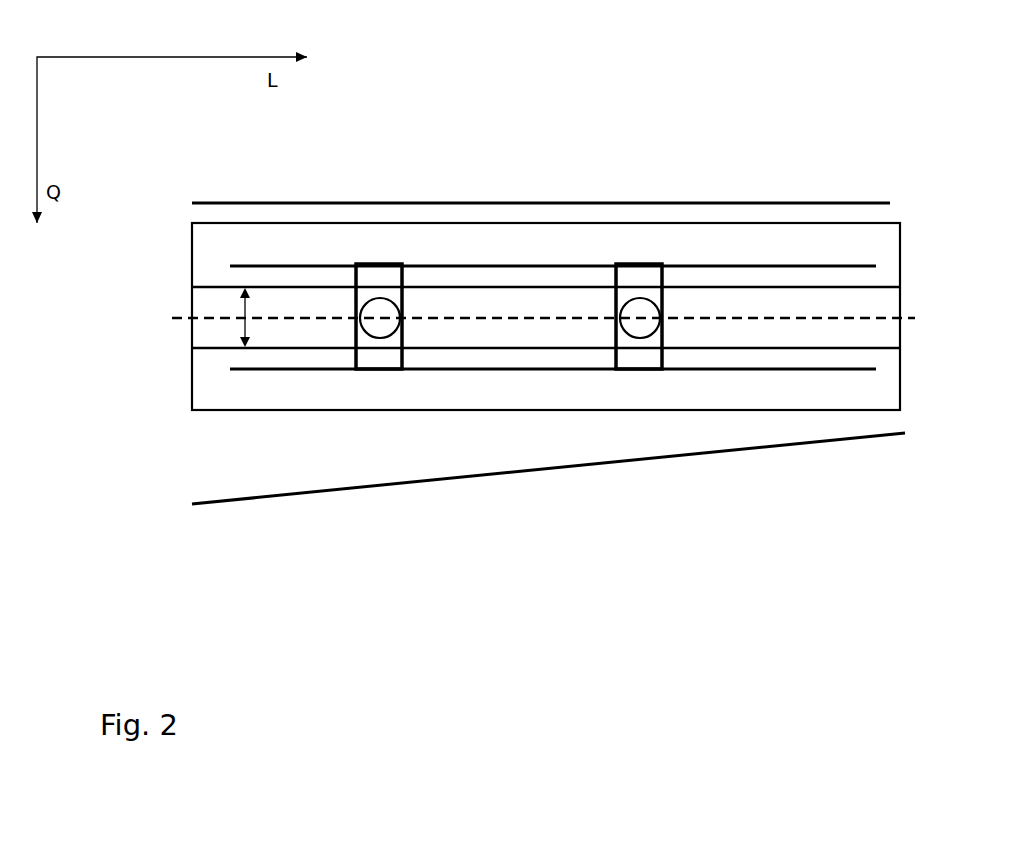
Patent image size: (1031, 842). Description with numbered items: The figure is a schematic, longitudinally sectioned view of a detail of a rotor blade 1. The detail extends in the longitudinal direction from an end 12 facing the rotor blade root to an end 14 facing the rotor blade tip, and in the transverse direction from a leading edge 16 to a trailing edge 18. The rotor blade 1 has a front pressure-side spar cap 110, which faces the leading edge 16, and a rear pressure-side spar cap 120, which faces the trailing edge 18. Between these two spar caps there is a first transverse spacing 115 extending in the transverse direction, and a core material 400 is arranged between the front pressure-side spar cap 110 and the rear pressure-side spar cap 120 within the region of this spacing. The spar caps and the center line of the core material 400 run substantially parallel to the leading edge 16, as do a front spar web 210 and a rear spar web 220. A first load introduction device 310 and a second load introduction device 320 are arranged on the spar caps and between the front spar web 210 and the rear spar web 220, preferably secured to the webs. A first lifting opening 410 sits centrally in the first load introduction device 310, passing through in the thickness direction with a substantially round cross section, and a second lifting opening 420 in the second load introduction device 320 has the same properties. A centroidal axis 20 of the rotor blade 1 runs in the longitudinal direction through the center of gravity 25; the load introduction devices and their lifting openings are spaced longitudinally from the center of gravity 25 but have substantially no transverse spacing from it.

The rotor blade 1 is at (936, 145).
The end facing the rotor blade root 12 is at (176, 345).
The end facing the rotor blade tip 14 is at (928, 315).
The leading edge 16 is at (542, 203).
The trailing edge 18 is at (325, 492).
The centroidal axis 20 is at (453, 318).
The center of gravity 25 is at (535, 330).
The front pressure-side spar cap 110 is at (555, 160).
The first transverse spacing 115 is at (243, 310).
The rear pressure-side spar cap 120 is at (570, 472).
The front spar web 210 is at (707, 263).
The rear spar web 220 is at (710, 370).
The first load introduction device 310 is at (380, 263).
The second load introduction device 320 is at (638, 263).
The core material 400 is at (875, 302).
The first lifting opening 410 is at (385, 322).
The second lifting opening 420 is at (640, 325).